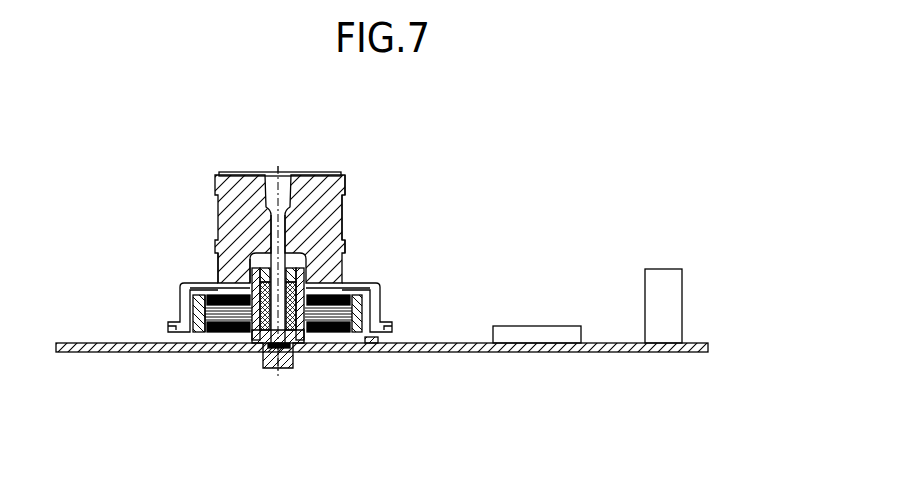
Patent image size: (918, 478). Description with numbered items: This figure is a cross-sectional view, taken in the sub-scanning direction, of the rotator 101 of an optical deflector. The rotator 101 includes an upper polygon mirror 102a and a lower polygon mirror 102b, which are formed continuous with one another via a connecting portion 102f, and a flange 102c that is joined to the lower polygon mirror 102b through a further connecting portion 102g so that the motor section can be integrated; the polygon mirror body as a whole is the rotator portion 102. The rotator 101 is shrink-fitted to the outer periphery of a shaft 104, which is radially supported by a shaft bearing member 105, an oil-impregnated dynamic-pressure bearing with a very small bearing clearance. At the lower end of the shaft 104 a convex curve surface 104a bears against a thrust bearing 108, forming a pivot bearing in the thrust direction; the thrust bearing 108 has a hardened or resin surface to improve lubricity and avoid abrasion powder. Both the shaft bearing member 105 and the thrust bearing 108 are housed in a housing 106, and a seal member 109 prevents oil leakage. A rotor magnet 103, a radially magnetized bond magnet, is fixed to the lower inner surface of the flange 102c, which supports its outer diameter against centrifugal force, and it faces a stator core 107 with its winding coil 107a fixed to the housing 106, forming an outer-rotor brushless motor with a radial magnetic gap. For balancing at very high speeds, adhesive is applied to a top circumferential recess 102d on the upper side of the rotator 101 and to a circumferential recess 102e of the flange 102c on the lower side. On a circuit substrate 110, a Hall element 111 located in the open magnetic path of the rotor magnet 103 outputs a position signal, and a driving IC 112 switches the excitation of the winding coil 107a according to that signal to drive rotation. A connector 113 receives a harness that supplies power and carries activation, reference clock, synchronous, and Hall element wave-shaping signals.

The rotator 101 is at (290, 135).
The housing 102 is at (323, 187).
The polygon mirror 102a is at (345, 185).
The polygon mirror 102b is at (345, 248).
The flange 102c is at (374, 290).
The top circumferential recess 102d is at (232, 172).
The circumferential recess 102e is at (385, 325).
The connecting portion 102f is at (345, 215).
The connecting portion 102g is at (218, 262).
The rotor magnet 103 is at (362, 308).
The shaft 104 is at (290, 188).
The convex curve surface 104a is at (270, 370).
The shaft bearing member 105 is at (305, 345).
The housing 106 is at (300, 352).
The stator core 107 is at (213, 334).
The winding coil 107a is at (233, 340).
The thrust bearing 108 is at (291, 370).
The seal member 109 is at (263, 242).
The circuit substrate 110 is at (437, 348).
The Hall element 111 is at (372, 344).
The driving IC 112 is at (538, 330).
The connector 113 is at (662, 272).